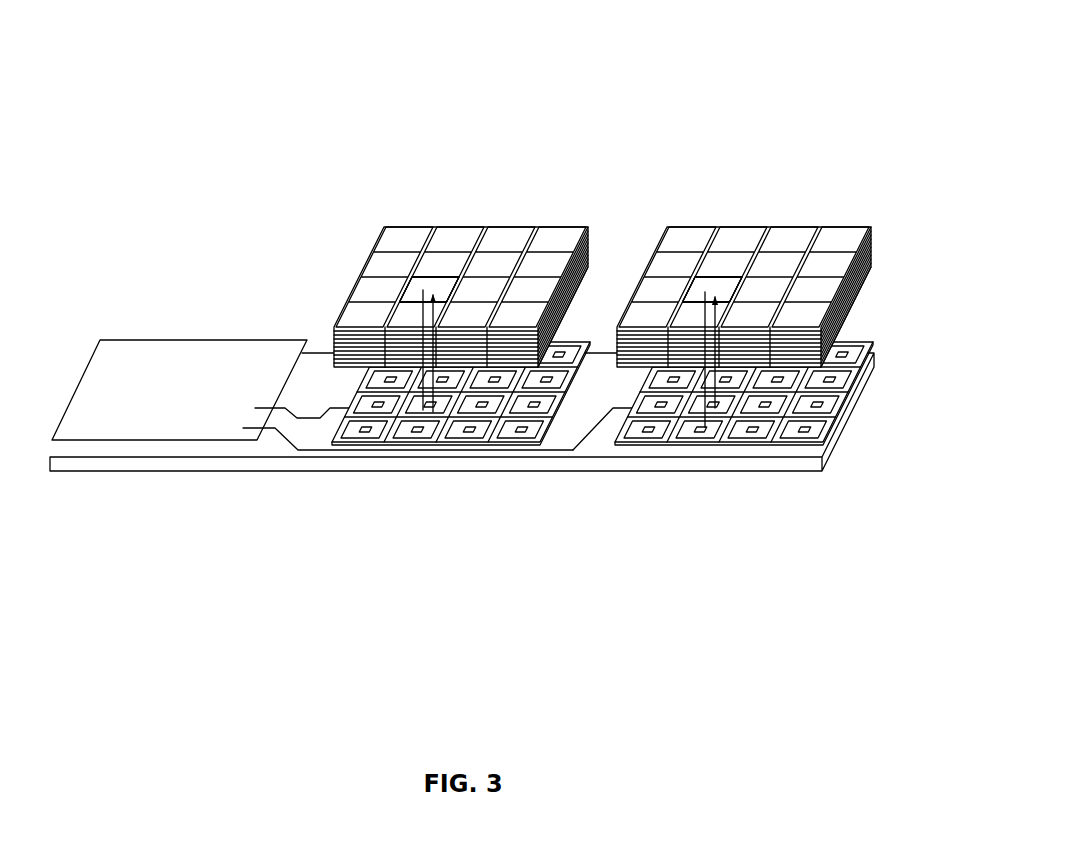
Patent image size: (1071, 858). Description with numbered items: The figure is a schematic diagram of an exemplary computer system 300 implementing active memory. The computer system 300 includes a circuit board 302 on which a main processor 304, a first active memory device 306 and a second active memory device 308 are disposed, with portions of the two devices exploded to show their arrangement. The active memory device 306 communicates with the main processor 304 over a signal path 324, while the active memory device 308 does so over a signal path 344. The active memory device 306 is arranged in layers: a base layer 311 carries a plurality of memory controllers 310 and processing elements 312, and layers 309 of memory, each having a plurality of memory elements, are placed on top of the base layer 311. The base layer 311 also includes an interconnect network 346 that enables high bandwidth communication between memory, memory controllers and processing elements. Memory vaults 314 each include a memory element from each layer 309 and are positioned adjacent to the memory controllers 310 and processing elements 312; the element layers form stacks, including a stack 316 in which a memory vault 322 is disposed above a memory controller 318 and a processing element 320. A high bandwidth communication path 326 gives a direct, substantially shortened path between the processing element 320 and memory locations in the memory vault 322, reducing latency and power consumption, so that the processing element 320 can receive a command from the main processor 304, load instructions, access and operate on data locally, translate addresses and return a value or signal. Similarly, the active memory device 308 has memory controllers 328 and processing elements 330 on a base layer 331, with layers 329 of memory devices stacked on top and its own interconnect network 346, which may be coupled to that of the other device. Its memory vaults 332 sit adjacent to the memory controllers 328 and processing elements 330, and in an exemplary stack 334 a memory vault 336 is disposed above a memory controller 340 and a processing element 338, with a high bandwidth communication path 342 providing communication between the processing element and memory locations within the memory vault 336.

The computer system 300 is at (360, 90).
The circuit board 302 is at (198, 467).
The main processor 304 is at (197, 400).
The active memory device 306 is at (395, 348).
The active memory device 308 is at (736, 336).
The layers 309 is at (330, 327).
The memory controllers 310 is at (479, 407).
The base layer 311 is at (448, 446).
The processing elements 312 is at (545, 410).
The memory vaults 314 is at (563, 262).
The stack 316 is at (398, 288).
The memory controller 318 is at (425, 410).
The processing element 320 is at (437, 412).
The memory vault 322 is at (413, 282).
The signal path 324 is at (327, 408).
The high bandwidth communication path 326 is at (417, 308).
The memory controllers 328 is at (757, 410).
The layers 329 is at (872, 222).
The processing elements 330 is at (820, 410).
The base layer 331 is at (724, 448).
The memory vaults 332 is at (845, 240).
The stack 334 is at (718, 283).
The memory vault 336 is at (703, 292).
The processing element 338 is at (712, 408).
The memory controller 340 is at (705, 427).
The high bandwidth communication path 342 is at (700, 305).
The signal path 344 is at (310, 448).
The interconnect network 346 is at (647, 443).